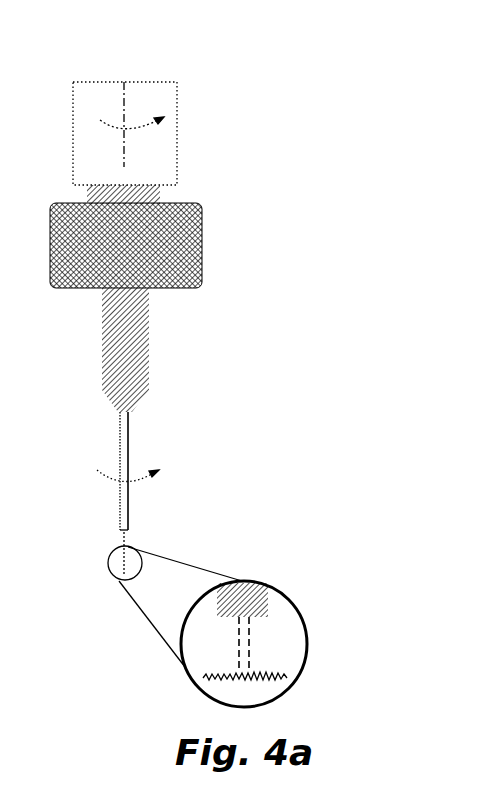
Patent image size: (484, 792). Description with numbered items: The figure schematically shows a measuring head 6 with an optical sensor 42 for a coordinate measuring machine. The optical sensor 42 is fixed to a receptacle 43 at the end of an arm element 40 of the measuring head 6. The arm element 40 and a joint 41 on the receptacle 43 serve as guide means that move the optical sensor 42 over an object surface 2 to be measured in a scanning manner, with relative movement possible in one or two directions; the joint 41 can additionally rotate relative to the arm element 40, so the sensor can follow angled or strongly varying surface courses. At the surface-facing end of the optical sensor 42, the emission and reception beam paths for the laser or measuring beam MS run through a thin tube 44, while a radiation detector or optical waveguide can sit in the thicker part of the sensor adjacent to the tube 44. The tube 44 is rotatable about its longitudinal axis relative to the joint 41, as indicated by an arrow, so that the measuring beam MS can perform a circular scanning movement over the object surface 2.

The measuring head 6 is at (205, 55).
The arm element 40 is at (167, 127).
The receptacle 43 is at (156, 187).
The joint 41 is at (186, 241).
The optical sensor 42 is at (147, 353).
The thin tube 44 is at (128, 438).
The measuring beam MS is at (127, 548).
The object surface 2 is at (283, 672).